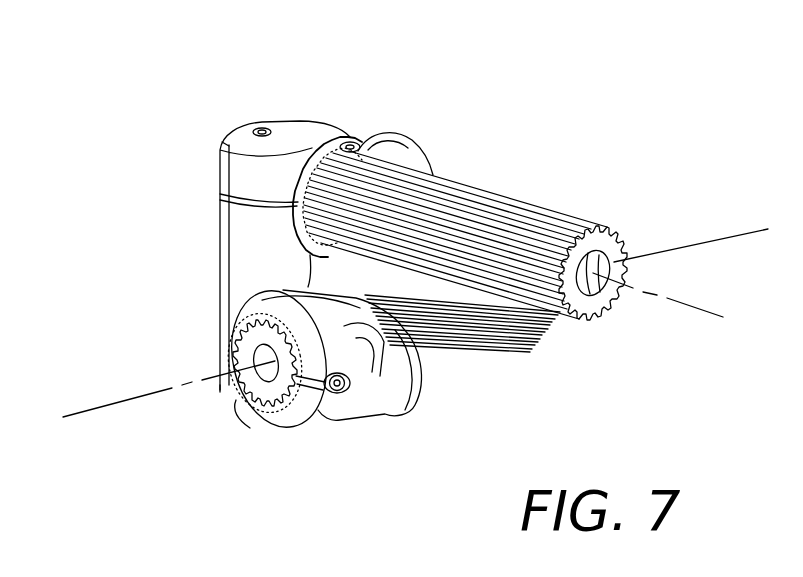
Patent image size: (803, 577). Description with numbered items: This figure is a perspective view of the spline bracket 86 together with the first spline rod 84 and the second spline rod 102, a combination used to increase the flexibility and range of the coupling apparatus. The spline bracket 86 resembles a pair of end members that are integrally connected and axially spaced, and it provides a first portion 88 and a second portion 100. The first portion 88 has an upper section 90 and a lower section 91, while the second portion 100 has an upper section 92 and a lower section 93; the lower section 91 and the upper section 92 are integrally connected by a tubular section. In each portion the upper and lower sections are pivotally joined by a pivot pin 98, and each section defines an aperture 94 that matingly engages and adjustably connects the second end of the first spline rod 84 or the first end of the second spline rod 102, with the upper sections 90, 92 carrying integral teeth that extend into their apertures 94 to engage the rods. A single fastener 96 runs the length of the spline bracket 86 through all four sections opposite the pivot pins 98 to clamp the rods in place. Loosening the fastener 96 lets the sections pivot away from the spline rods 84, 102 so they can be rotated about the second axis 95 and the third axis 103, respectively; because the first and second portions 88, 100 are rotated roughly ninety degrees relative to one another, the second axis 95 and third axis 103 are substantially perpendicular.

The first spline rod 84 is at (501, 214).
The spline bracket 86 is at (212, 257).
The first portion 88 is at (216, 136).
The upper section 90 is at (386, 145).
The lower section 91 is at (230, 213).
The upper section 92 is at (240, 318).
The lower section 93 is at (248, 405).
The aperture 94 is at (365, 140).
The second axis 95 is at (690, 302).
The fastener 96 is at (258, 128).
The pivot pin 98 is at (410, 157).
The second portion 100 is at (220, 390).
The second spline rod 102 is at (510, 327).
The third axis 103 is at (122, 390).